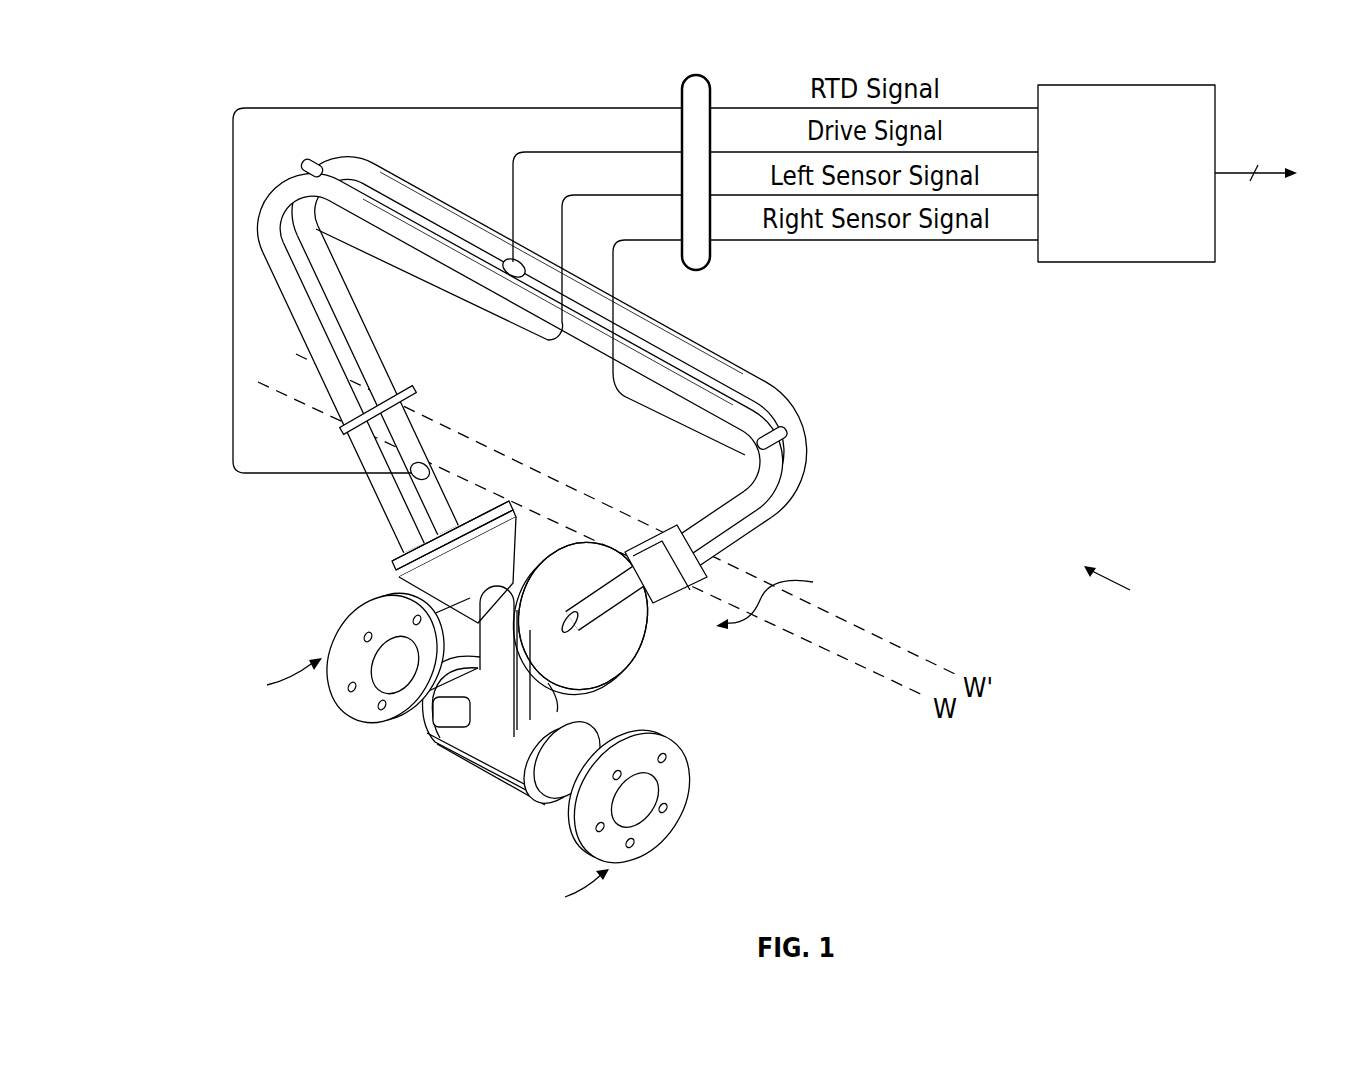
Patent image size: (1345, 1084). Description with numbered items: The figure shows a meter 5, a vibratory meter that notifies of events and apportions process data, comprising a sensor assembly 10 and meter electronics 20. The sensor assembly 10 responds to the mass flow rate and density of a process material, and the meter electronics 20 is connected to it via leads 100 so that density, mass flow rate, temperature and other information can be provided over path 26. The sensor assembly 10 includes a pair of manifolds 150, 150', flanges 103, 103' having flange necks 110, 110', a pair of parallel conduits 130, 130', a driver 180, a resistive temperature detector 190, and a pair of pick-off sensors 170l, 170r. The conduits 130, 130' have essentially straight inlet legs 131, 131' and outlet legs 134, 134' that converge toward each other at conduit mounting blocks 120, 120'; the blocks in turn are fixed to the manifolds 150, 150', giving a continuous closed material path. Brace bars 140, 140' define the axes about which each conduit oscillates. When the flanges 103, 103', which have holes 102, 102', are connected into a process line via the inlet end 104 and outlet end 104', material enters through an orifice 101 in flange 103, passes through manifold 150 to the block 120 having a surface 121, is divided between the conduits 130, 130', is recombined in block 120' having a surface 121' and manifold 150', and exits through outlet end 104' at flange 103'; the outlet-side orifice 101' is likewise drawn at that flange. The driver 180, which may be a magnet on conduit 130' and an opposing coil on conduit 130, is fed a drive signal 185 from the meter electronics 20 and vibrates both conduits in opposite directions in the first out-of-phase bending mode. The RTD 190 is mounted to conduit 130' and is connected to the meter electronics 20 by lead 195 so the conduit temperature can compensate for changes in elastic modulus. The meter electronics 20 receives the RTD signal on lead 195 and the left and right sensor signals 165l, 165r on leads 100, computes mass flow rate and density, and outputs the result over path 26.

The meter 5 is at (1115, 584).
The sensor assembly 10 is at (780, 599).
The meter electronics 20 is at (1163, 84).
The path 26 is at (1238, 172).
The leads 100 is at (682, 92).
The orifice 101 is at (355, 658).
The outlet flange 101' is at (644, 796).
The holes 102 is at (347, 701).
The holes 102' is at (678, 784).
The flange 103 is at (375, 625).
The flange 103' is at (671, 824).
The inlet end 104 is at (273, 678).
The outlet end 104' is at (560, 891).
The flange neck 110 is at (400, 690).
The flange neck 110' is at (561, 792).
The conduit mounting block 120 is at (431, 558).
The conduit mounting block 120' is at (612, 619).
The surface 121 is at (464, 493).
The surface 121' is at (596, 600).
The conduit 130 is at (520, 410).
The conduit 130' is at (549, 362).
The inlet leg 131 is at (292, 373).
The inlet leg 131' is at (380, 380).
The outlet leg 134 is at (664, 538).
The outlet leg 134' is at (786, 519).
The brace bar 140 is at (342, 424).
The brace bar 140' is at (667, 594).
The manifold 150 is at (484, 705).
The manifold 150' is at (578, 670).
The left sensor signal 165l is at (1017, 198).
The right sensor signal 165r is at (915, 241).
The pick-off sensor 170l is at (310, 164).
The pick-off sensor 170r is at (787, 440).
The driver 180 is at (513, 262).
The drive signal 185 is at (745, 150).
The resistive temperature detector (RTD) 190 is at (421, 465).
The lead 195 is at (733, 105).